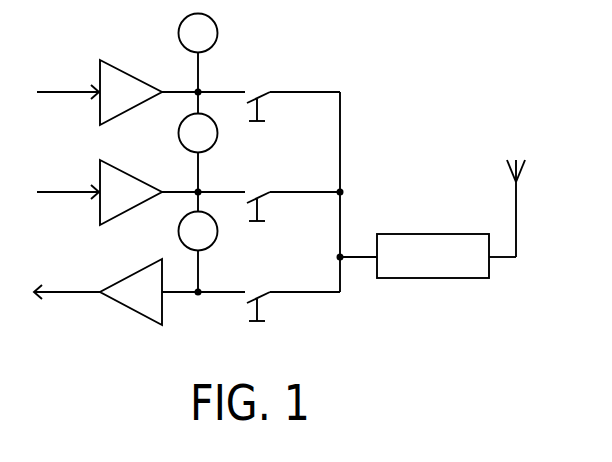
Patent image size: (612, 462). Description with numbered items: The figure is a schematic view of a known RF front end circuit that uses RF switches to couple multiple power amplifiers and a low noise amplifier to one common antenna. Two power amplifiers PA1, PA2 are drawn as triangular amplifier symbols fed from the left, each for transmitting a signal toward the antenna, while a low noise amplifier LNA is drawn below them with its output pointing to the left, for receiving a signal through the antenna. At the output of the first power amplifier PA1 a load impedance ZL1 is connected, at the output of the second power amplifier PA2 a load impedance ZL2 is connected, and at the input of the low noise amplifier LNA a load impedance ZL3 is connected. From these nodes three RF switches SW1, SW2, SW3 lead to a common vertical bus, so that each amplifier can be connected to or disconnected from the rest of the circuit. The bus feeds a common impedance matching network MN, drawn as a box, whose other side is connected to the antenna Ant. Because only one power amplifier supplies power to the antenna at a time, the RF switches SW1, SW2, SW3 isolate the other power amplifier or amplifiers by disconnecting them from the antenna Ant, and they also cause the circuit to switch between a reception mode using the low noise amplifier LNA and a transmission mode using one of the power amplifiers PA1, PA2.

The power amplifier PA1 is at (141, 92).
The power amplifier PA2 is at (141, 192).
The low noise amplifier LNA is at (139, 297).
The load impedance ZL1 is at (198, 55).
The load impedance ZL2 is at (198, 144).
The load impedance ZL3 is at (198, 244).
The RF switch SW1 is at (287, 122).
The RF switch SW2 is at (287, 221).
The RF switch SW3 is at (287, 321).
The impedance matching network MN is at (428, 256).
The antenna Ant is at (537, 208).